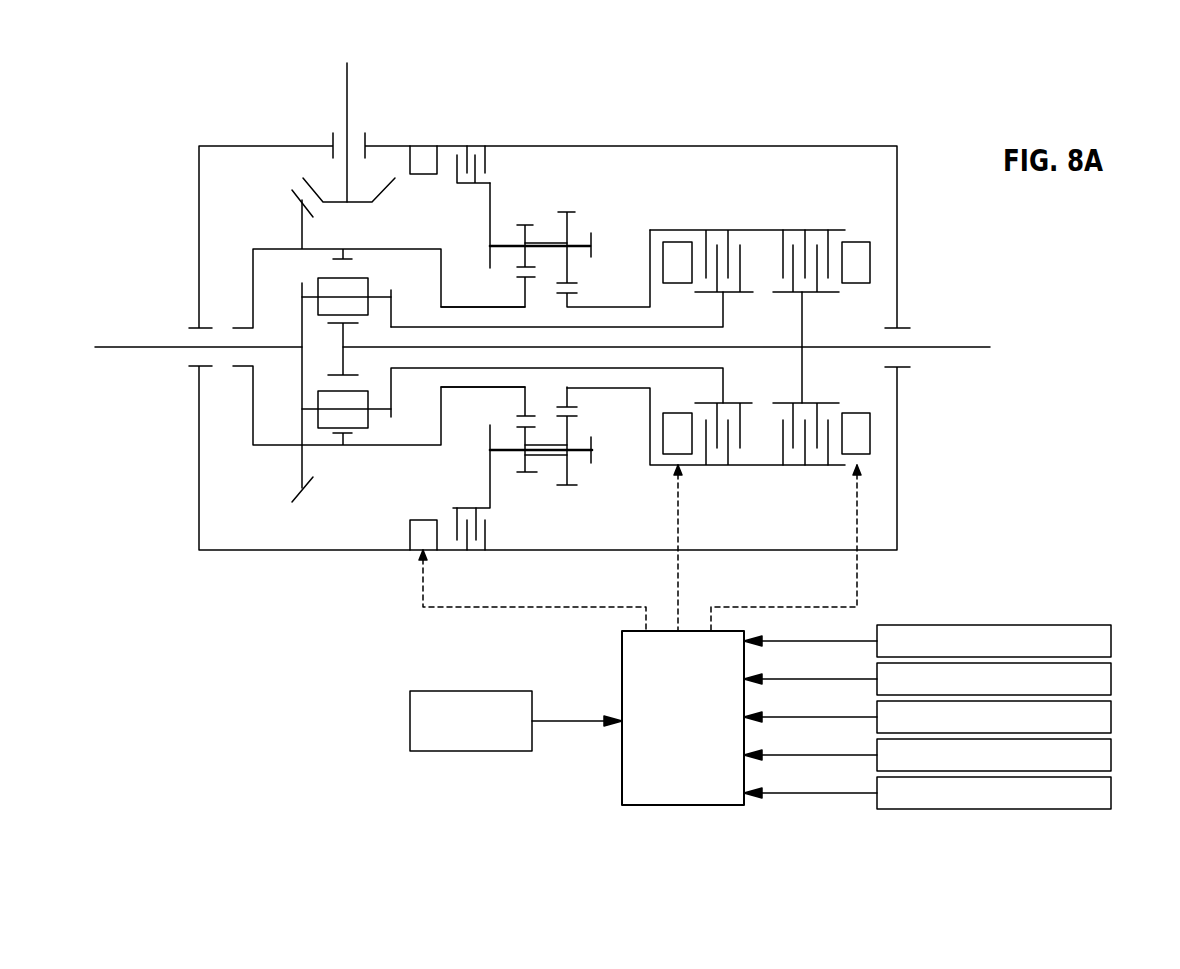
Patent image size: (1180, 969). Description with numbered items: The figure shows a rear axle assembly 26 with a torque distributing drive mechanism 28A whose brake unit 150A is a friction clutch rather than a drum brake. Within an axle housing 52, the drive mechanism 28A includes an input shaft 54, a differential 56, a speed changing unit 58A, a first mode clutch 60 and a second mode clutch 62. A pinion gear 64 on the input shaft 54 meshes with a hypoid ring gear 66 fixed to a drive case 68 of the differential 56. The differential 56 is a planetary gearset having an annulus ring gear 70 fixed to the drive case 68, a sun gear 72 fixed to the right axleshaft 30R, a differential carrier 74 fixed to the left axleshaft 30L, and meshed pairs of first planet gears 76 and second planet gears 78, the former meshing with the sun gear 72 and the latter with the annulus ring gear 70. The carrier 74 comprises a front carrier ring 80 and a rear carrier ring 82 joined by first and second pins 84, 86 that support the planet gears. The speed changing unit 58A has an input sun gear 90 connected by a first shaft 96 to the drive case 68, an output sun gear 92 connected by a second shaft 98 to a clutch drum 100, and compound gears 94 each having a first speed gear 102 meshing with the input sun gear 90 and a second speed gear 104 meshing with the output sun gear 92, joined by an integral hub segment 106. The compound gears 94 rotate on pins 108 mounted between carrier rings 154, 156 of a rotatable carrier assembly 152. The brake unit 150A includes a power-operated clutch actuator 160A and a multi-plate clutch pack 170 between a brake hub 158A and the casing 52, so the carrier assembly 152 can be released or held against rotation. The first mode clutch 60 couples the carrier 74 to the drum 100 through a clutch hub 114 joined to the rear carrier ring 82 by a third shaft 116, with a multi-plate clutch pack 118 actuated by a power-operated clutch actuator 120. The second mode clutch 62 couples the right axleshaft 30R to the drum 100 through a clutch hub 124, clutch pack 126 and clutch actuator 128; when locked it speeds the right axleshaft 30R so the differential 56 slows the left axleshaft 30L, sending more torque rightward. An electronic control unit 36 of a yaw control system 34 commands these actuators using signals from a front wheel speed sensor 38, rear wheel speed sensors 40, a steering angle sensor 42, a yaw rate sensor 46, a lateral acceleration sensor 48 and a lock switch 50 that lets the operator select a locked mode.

The rear axle assembly 26 is at (855, 55).
The drive mechanism 28A is at (713, 113).
The left axleshaft 30L is at (122, 346).
The right axleshaft 30R is at (958, 346).
The yaw control system 34 is at (580, 762).
The electronic control unit 36 is at (630, 655).
The front wheel speed sensor 38 is at (1110, 642).
The rear wheel speed sensors 40 is at (1110, 680).
The steering angle sensor 42 is at (1110, 718).
The yaw rate sensor 46 is at (1110, 756).
The lateral acceleration sensor 48 is at (1110, 794).
The lock switch 50 is at (420, 710).
The axle housing 52 is at (897, 176).
The input shaft 54 is at (348, 87).
The differential 56 is at (381, 465).
The speed changing unit 58A is at (551, 195).
The first mode clutch 60 is at (713, 220).
The second mode clutch 62 is at (824, 220).
The pinion gear 64 is at (387, 185).
The hypoid ring gear 66 is at (302, 490).
The drive case 68 is at (377, 247).
The annulus ring gear 70 is at (343, 446).
The sun gear 72 is at (346, 352).
The differential carrier 74 is at (298, 302).
The first planet gears 76 is at (363, 282).
The second planet gears 78 is at (363, 417).
The front carrier ring 80 is at (300, 375).
The rear carrier ring 82 is at (393, 310).
The first pins 84 is at (317, 295).
The second pins 86 is at (313, 410).
The input sun gear 90 is at (527, 403).
The output sun gear 92 is at (565, 395).
The compound gears 94 is at (548, 237).
The first shaft 96 is at (455, 307).
The second shaft 98 is at (608, 307).
The clutch drum 100 is at (757, 228).
The first speed gear 102 is at (517, 472).
The second speed gear 104 is at (568, 470).
The integral hub segment 106 is at (545, 455).
The pins 108 is at (577, 238).
The clutch hub 114 is at (723, 310).
The third shaft 116 is at (557, 328).
The multi-plate clutch pack 118 is at (735, 437).
The power-operated clutch actuator 120 is at (678, 248).
The clutch hub 124 is at (803, 318).
The multi-plate clutch pack 126 is at (803, 447).
The power-operated clutch actuator 128 is at (862, 258).
The brake unit 150A is at (503, 157).
The carrier assembly 152 is at (484, 477).
The carrier ring 154 is at (488, 208).
The carrier ring 156 is at (597, 240).
The brake hub 158A is at (462, 510).
The power-operated clutch actuator 160A is at (424, 148).
The multi-plate clutch pack 170 is at (483, 528).